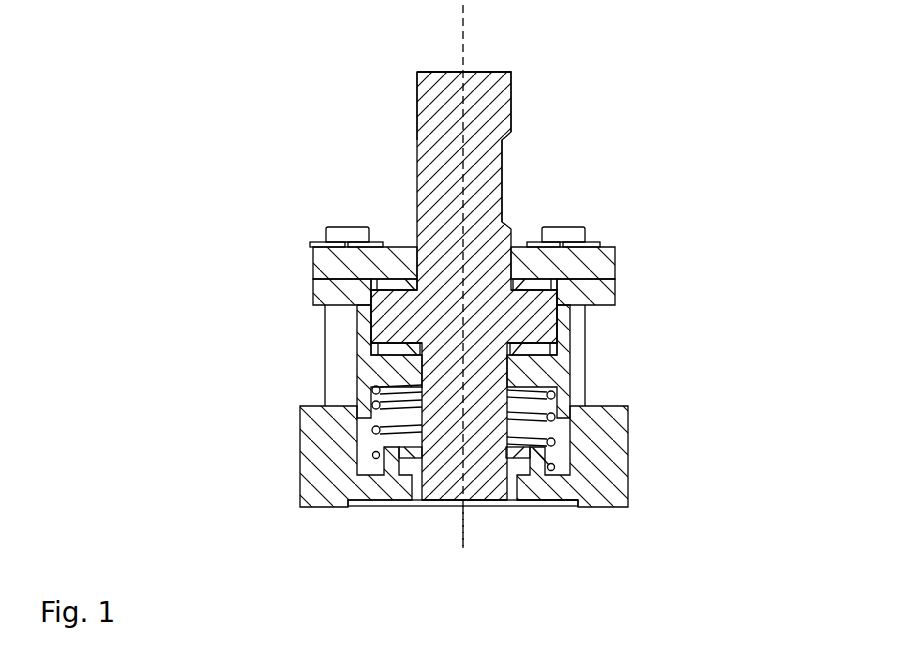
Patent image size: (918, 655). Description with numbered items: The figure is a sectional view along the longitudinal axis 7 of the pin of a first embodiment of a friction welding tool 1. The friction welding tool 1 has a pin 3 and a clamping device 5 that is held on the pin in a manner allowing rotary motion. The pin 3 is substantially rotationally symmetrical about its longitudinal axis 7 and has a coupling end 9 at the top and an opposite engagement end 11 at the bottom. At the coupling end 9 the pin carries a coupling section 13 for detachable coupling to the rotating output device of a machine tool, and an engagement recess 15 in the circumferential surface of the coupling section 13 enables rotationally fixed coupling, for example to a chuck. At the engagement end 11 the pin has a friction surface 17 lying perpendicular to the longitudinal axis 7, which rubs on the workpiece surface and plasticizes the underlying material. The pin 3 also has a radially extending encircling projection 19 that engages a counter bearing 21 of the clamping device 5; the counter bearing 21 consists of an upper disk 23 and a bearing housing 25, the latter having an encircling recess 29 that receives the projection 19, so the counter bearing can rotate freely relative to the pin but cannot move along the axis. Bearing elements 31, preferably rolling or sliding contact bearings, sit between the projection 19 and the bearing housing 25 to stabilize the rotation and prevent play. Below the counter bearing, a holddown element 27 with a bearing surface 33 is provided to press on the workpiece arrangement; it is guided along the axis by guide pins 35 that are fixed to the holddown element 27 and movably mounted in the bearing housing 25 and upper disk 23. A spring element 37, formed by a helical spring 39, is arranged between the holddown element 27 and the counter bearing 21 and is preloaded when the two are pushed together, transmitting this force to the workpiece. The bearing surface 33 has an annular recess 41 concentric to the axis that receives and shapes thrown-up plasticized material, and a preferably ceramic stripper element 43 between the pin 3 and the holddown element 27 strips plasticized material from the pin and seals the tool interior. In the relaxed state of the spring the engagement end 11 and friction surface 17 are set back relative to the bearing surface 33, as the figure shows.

The friction welding tool 1 is at (668, 85).
The pin 3 is at (438, 323).
The clamping device 5 is at (655, 373).
The longitudinal axis 7 is at (465, 522).
The coupling end 9 is at (478, 78).
The engagement end 11 is at (445, 490).
The coupling section 13 is at (447, 110).
The engagement recess 15 is at (503, 183).
The friction surface 17 is at (490, 500).
The encircling projection 19 is at (538, 323).
The counter bearing 21 is at (300, 288).
The upper disk 23 is at (330, 257).
The bearing housing 25 is at (335, 289).
The holddown element 27 is at (602, 456).
The encircling recess 29 is at (370, 353).
The bearing elements 31 is at (550, 342).
The bearing surface 33 is at (323, 505).
The guide pins 35 is at (340, 342).
The spring element 37 is at (377, 428).
The helical spring 39 is at (531, 430).
The annular recess 41 is at (560, 503).
The stripper element 43 is at (418, 483).